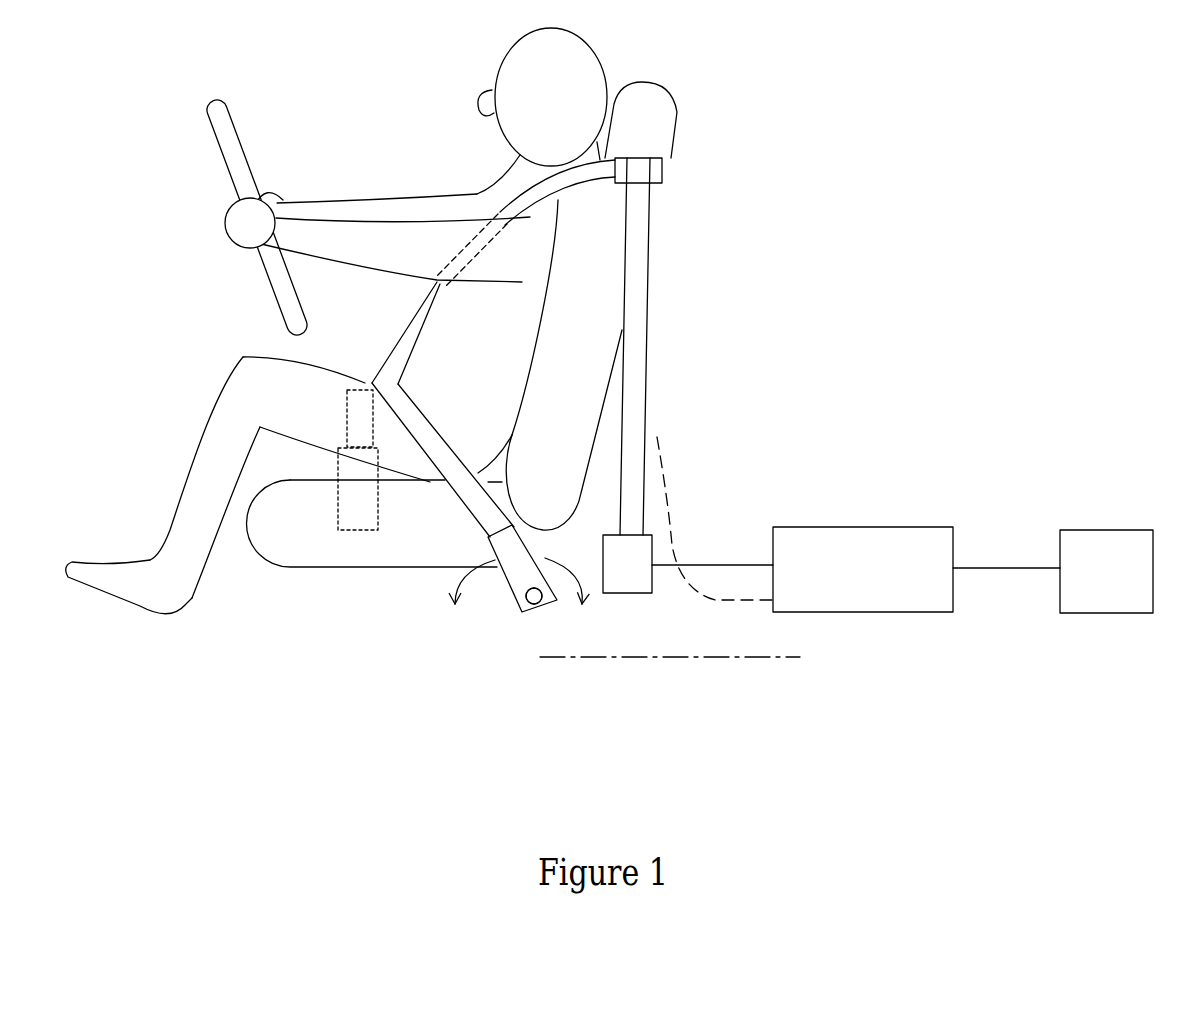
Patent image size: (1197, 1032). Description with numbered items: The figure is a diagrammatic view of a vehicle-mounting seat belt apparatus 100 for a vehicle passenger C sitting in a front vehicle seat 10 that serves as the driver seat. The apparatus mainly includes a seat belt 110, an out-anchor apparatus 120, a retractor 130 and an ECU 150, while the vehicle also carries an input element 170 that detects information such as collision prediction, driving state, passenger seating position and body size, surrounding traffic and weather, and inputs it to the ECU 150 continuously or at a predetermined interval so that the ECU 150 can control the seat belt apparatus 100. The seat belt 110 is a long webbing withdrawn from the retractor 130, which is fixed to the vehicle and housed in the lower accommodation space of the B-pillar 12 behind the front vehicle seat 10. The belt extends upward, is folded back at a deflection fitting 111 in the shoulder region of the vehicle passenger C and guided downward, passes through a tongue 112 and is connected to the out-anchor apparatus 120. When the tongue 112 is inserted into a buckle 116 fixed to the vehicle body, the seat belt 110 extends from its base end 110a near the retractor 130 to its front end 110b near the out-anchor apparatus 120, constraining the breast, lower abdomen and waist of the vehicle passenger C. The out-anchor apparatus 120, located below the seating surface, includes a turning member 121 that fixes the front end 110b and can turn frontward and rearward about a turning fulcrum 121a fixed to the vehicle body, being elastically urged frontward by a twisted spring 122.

The seat belt apparatus 100 is at (909, 232).
The front vehicle seat 10 is at (678, 125).
The deflection fitting 111 is at (664, 172).
The seat belt 110 is at (652, 312).
The base end 110a is at (630, 517).
The front end 110b is at (492, 517).
The tongue 112 is at (353, 437).
The buckle 116 is at (355, 513).
The B-pillar 12 is at (670, 522).
The out-anchor apparatus 120 is at (497, 618).
The turning member 121 is at (523, 612).
The turning fulcrum 121a is at (531, 609).
The twisted spring 122 is at (567, 678).
The retractor 130 is at (625, 597).
The ECU 150 is at (891, 525).
The input element 170 is at (1090, 528).
The vehicle passenger C is at (450, 195).